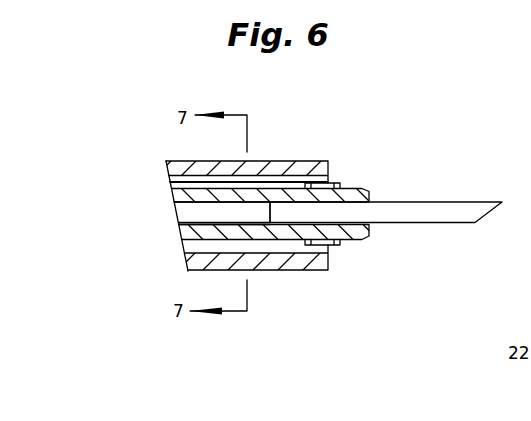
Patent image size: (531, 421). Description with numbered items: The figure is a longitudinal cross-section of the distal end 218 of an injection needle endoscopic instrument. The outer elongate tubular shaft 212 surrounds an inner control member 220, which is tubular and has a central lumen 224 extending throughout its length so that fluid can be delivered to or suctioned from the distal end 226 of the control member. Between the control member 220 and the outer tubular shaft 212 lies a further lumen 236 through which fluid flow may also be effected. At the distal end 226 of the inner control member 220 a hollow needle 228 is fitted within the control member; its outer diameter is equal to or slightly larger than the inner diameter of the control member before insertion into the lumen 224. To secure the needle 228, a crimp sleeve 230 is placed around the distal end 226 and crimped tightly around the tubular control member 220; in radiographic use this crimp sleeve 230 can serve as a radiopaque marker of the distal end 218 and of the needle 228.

The tubular shaft 212 is at (263, 262).
The distal end 218 is at (284, 167).
The inner control member 220 is at (192, 233).
The central lumen 224 is at (200, 212).
The distal end of control member 226 is at (355, 237).
The hollow needle 228 is at (420, 214).
The crimp sleeve 230 is at (338, 186).
The lumen between control member and tubular shaft 236 is at (180, 182).